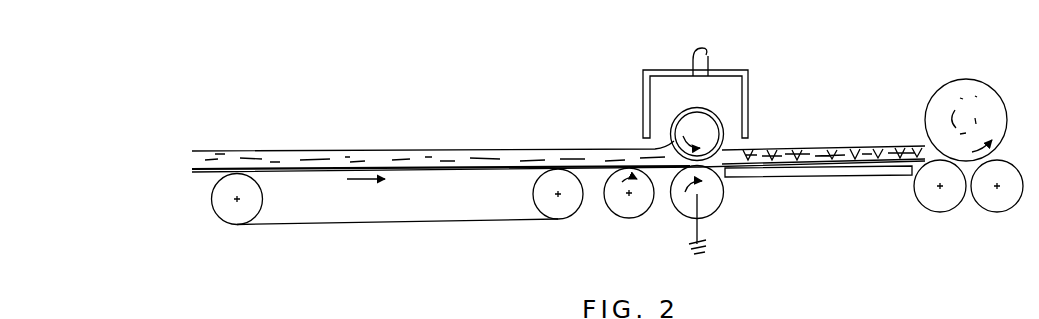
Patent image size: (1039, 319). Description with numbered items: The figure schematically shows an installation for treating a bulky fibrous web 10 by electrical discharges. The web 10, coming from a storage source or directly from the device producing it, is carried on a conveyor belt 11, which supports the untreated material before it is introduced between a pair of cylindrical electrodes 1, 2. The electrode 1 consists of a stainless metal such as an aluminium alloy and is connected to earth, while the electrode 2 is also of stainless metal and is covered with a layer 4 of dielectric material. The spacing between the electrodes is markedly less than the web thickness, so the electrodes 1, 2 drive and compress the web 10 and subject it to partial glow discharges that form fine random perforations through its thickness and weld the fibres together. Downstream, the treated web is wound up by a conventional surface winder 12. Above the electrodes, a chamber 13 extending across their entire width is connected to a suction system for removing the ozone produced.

The electrode 1 is at (704, 204).
The electrode 2 is at (708, 133).
The layer of dielectric material 4 is at (718, 113).
The bulky fibrous web 10 is at (328, 150).
The conveyor belt 11 is at (371, 226).
The surface winder 12 is at (968, 170).
The chamber 13 is at (728, 66).